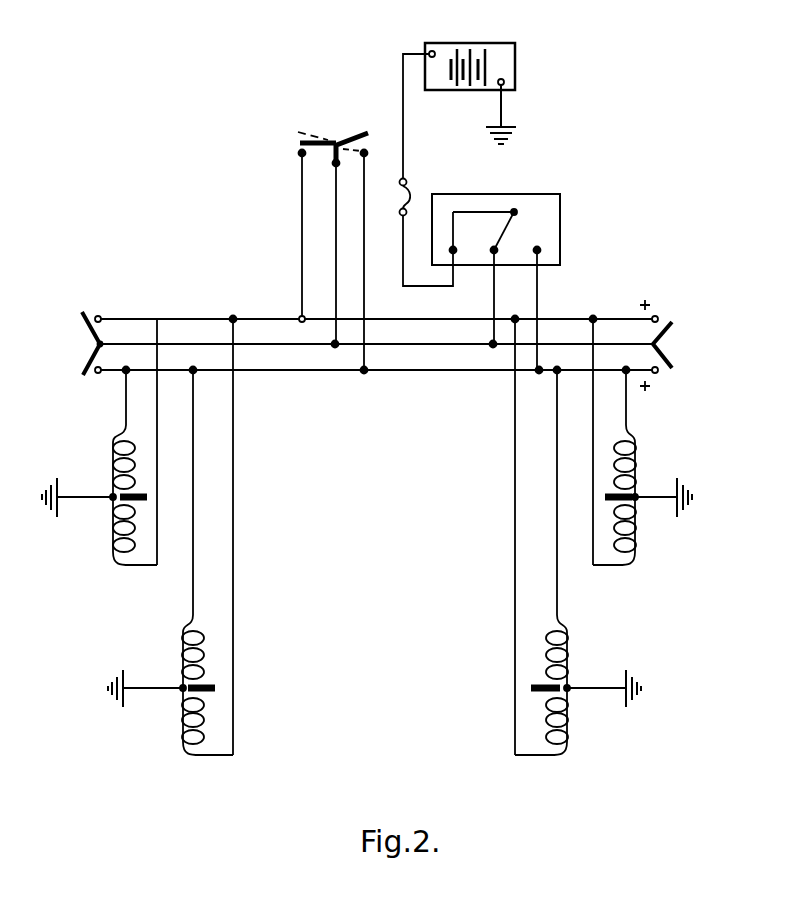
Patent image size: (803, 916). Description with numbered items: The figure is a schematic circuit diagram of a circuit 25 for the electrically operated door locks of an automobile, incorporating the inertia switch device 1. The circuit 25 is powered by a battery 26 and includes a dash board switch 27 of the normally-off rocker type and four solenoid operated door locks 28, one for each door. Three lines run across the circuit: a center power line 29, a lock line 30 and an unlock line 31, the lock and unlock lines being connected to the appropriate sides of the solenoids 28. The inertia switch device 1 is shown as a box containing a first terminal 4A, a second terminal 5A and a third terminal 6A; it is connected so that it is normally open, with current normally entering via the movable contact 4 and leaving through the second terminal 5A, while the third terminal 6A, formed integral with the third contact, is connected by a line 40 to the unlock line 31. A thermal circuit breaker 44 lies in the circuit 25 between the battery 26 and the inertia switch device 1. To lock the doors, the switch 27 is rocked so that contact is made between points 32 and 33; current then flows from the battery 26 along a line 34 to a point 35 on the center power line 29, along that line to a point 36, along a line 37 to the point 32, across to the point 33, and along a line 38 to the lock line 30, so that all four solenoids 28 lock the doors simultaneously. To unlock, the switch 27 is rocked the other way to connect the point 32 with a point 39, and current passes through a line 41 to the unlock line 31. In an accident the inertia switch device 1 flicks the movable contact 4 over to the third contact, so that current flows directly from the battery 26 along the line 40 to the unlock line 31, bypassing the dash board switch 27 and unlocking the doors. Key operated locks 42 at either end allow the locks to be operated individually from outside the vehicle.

The inertia switch device 1 is at (520, 253).
The movable contact 4 is at (509, 231).
The first terminal 4A is at (455, 252).
The second terminal 5A is at (493, 249).
The third terminal 6A is at (539, 250).
The circuit 25 is at (233, 230).
The battery 26 is at (512, 46).
The dash board switch 27 is at (295, 149).
The solenoid operated door locks 28 is at (116, 524).
The center power line 29 is at (280, 348).
The lock line 30 is at (195, 318).
The unlock line 31 is at (441, 372).
The point of the switch 32 is at (334, 165).
The point of the switch 33 is at (301, 158).
The line 34 is at (404, 120).
The point 35 is at (492, 343).
The point 36 is at (334, 350).
The line 37 is at (336, 238).
The line 38 is at (302, 264).
The point of the switch 39 is at (367, 153).
The line 40 is at (539, 292).
The line 41 is at (365, 272).
The key operated locks 42 is at (90, 362).
The thermal circuit breaker 44 is at (411, 186).